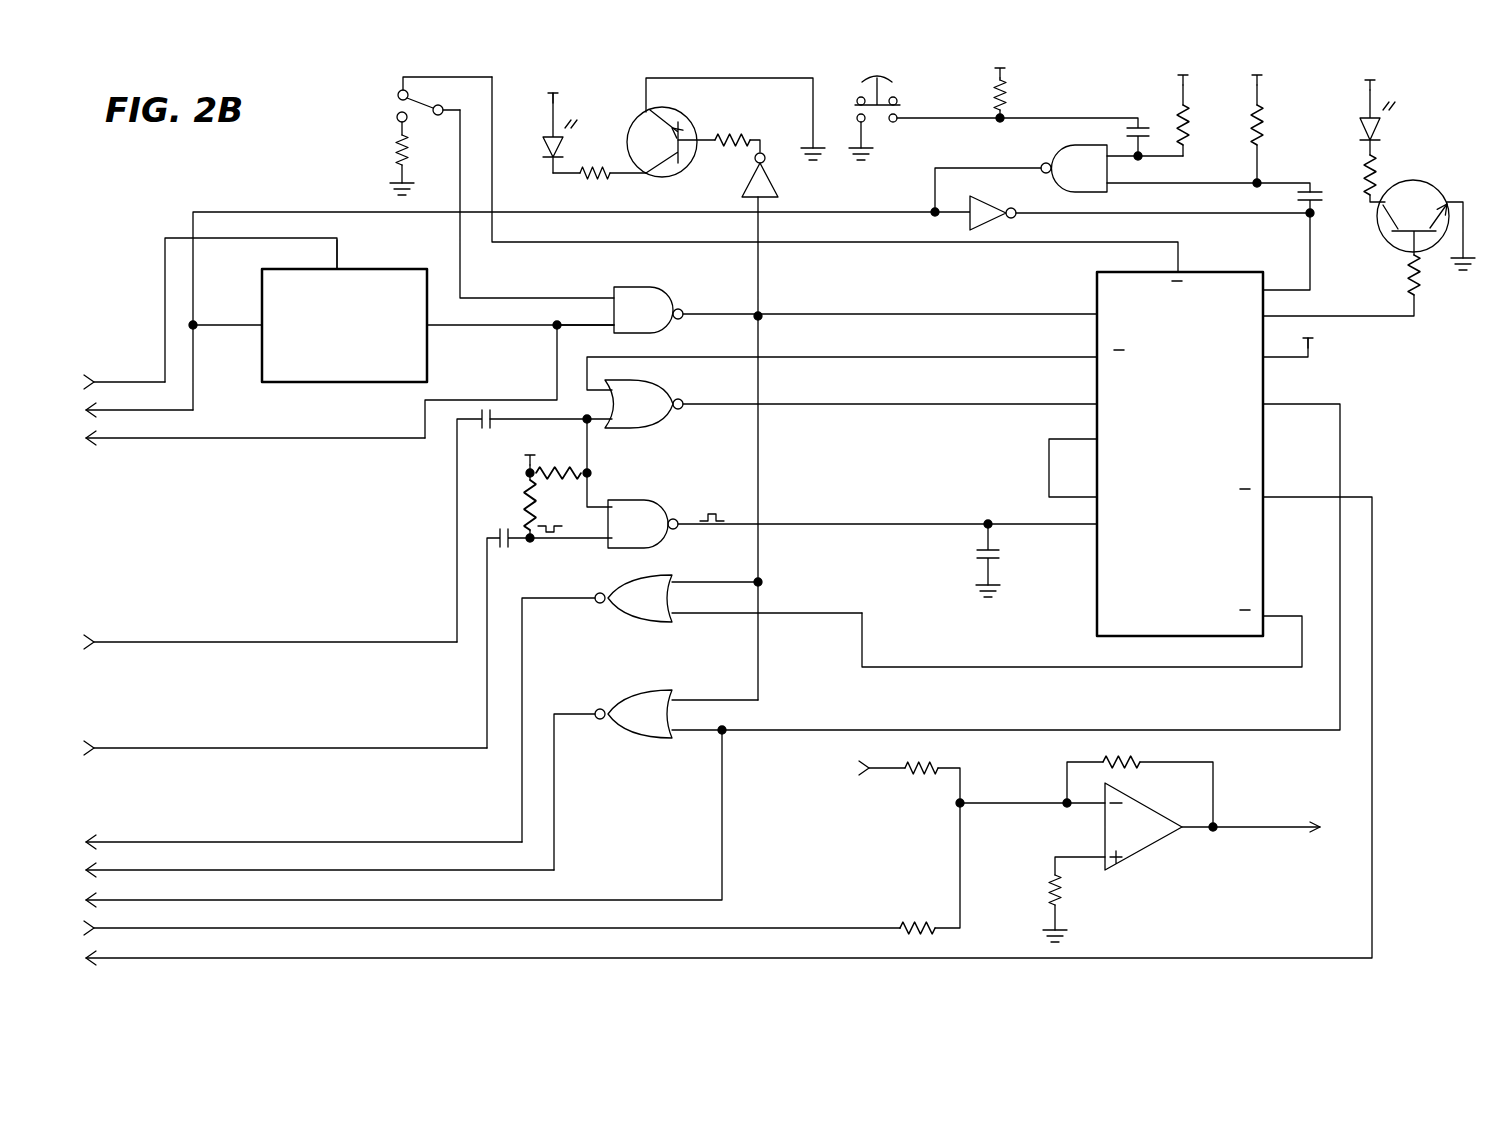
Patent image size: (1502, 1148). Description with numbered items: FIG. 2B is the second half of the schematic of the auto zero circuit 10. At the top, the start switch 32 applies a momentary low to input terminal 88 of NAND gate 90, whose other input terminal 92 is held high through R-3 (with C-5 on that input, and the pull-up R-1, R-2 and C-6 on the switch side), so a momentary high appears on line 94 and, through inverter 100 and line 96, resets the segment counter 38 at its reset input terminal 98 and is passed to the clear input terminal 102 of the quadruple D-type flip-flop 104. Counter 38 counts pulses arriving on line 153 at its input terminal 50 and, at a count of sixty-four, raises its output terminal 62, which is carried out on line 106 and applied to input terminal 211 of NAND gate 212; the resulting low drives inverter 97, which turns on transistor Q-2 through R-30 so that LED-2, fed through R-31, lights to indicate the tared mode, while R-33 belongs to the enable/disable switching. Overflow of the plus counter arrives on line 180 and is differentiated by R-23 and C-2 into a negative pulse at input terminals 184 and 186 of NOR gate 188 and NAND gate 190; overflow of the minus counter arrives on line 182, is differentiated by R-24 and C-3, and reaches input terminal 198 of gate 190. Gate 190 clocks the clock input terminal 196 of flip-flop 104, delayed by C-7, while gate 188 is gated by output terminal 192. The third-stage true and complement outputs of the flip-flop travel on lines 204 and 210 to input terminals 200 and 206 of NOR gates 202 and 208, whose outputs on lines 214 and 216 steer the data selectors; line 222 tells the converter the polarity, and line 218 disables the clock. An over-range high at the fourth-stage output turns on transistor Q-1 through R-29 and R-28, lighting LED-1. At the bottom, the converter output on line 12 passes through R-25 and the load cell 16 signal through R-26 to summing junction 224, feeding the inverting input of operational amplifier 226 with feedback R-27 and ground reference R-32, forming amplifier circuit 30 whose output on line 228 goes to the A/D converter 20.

The auto zero circuit 10 is at (297, 162).
The line 12 is at (338, 928).
The load cell 16 is at (823, 770).
The A/D converter 20 is at (1289, 872).
The amplifier circuit 30 is at (1057, 838).
The start switch 32 is at (952, 84).
The segment counter 38 is at (312, 382).
The input terminal 50 is at (344, 254).
The output terminal 62 is at (492, 327).
The input terminal 88 is at (1145, 168).
The NAND gate 90 is at (1062, 152).
The input terminal 92 is at (1208, 193).
The line 94 is at (994, 166).
The line 96 is at (149, 412).
The inverter 97 is at (776, 190).
The reset input terminal 98 is at (227, 328).
The inverter 100 is at (1000, 228).
The clear input terminal 102 is at (1286, 251).
The quadruple D-type flip-flop 104 is at (1097, 296).
The line 106 is at (216, 445).
The line 153 is at (136, 379).
The line 180 is at (346, 642).
The line 182 is at (360, 748).
The input terminal 184 is at (551, 406).
The input terminal 186 is at (603, 463).
The NOR gate 188 is at (637, 418).
The NAND gate 190 is at (662, 509).
The output terminal 192 is at (842, 362).
The clock input terminal 196 is at (887, 550).
The input terminal 198 is at (571, 543).
The input terminal 200 is at (699, 720).
The NOR gate 202 is at (637, 747).
The line 204 is at (1096, 730).
The input terminal 206 is at (767, 602).
The NOR gate 208 is at (635, 626).
The line 210 is at (1068, 666).
The input terminal 211 is at (585, 315).
The NAND gate 212 is at (658, 296).
The line 214 is at (346, 871).
The line 216 is at (304, 842).
The line 218 is at (390, 958).
The line 222 is at (370, 900).
The summing junction 224 is at (966, 800).
The operational amplifier 226 is at (1140, 846).
The line 228 is at (1310, 825).
The resistor R-33 is at (402, 136).
The resistor R-31 is at (599, 184).
The resistor R-30 is at (719, 133).
The transistor Q-2 is at (726, 139).
The tare mode indicator lamp LED-2 is at (578, 129).
The resistor R-1 is at (1015, 91).
The capacitor C-6 is at (1077, 128).
The resistor R-2 is at (1198, 111).
The resistor R-3 is at (1273, 125).
The capacitor C-5 is at (1292, 202).
The light emitting diode LED-1 is at (1398, 110).
The resistor R-29 is at (1389, 178).
The transistor Q-1 is at (1426, 221).
The resistor R-28 is at (1341, 285).
The capacitor C-2 is at (477, 526).
The resistor R-23 is at (553, 468).
The resistor R-24 is at (508, 507).
The capacitor C-3 is at (508, 638).
The capacitor C-7 is at (1017, 557).
The resistor R-26 is at (914, 771).
The resistor R-27 is at (1142, 784).
The resistor R-32 is at (1074, 899).
The resistor R-25 is at (929, 868).